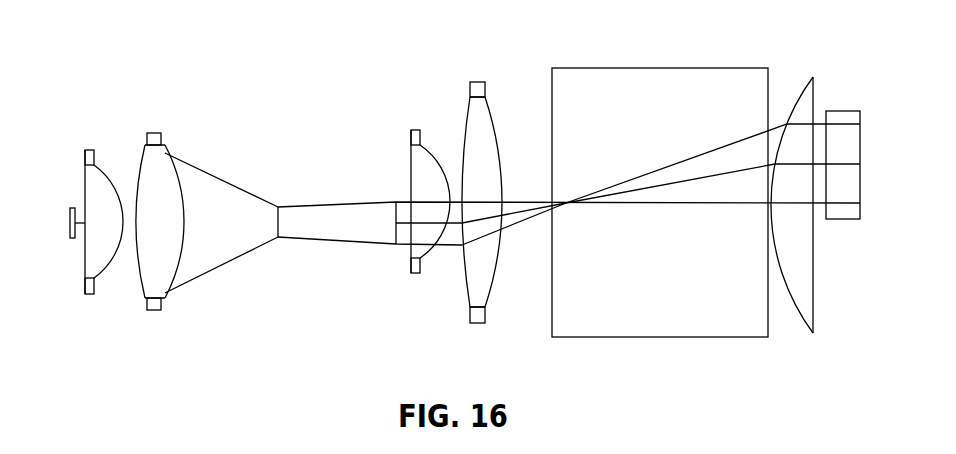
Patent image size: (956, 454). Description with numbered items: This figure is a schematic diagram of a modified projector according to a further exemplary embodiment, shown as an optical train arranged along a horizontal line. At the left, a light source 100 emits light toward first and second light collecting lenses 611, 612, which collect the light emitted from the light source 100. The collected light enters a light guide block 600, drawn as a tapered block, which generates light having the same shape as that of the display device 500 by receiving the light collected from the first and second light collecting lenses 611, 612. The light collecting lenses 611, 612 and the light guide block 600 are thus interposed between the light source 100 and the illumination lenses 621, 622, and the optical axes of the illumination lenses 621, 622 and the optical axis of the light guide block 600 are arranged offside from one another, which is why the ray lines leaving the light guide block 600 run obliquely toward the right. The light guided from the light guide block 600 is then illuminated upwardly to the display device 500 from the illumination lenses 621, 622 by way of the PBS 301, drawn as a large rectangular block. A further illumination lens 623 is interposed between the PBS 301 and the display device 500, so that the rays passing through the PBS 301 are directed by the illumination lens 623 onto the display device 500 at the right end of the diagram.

The light source 100 is at (71, 208).
The first light collecting lens 611 is at (102, 185).
The second light collecting lens 612 is at (168, 168).
The light guide block 600 is at (337, 213).
The illumination lens 621 is at (429, 163).
The illumination lens 622 is at (487, 117).
The illumination lens 623 is at (810, 80).
The PBS 301 is at (658, 83).
The display device 500 is at (850, 118).